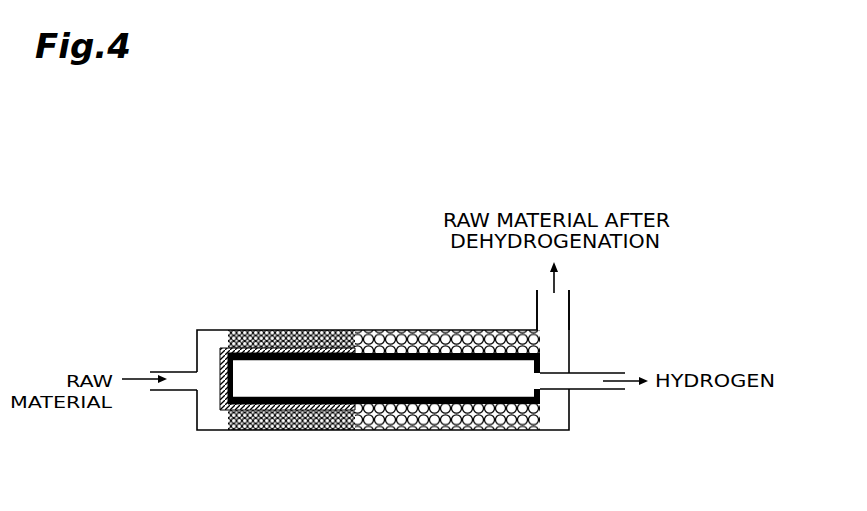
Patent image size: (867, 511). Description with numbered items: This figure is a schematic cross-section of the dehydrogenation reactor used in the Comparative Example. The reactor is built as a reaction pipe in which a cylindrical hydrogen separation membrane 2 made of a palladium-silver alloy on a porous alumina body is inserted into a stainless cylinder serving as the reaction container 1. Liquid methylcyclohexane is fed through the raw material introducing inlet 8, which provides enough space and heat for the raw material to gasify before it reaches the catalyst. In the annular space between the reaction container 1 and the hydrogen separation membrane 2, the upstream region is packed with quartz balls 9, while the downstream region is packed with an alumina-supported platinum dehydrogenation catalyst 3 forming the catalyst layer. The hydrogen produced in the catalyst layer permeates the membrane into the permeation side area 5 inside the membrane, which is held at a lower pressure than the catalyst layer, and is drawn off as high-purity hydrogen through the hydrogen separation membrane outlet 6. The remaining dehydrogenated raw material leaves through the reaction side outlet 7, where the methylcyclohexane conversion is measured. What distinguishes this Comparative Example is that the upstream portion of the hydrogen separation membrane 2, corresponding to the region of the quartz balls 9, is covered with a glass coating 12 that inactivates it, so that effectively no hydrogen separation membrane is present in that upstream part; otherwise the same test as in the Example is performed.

The reaction container 1 is at (196, 412).
The hydrogen separation membrane 2 is at (540, 411).
The dehydrogenation catalyst 3 is at (432, 330).
The permeation side area 5 is at (265, 363).
The hydrogen separation membrane outlet 6 is at (585, 383).
The reaction side outlet 7 is at (558, 309).
The raw material introducing inlet 8 is at (179, 374).
The quartz ball 9 is at (258, 429).
The glass coating 12 is at (327, 346).